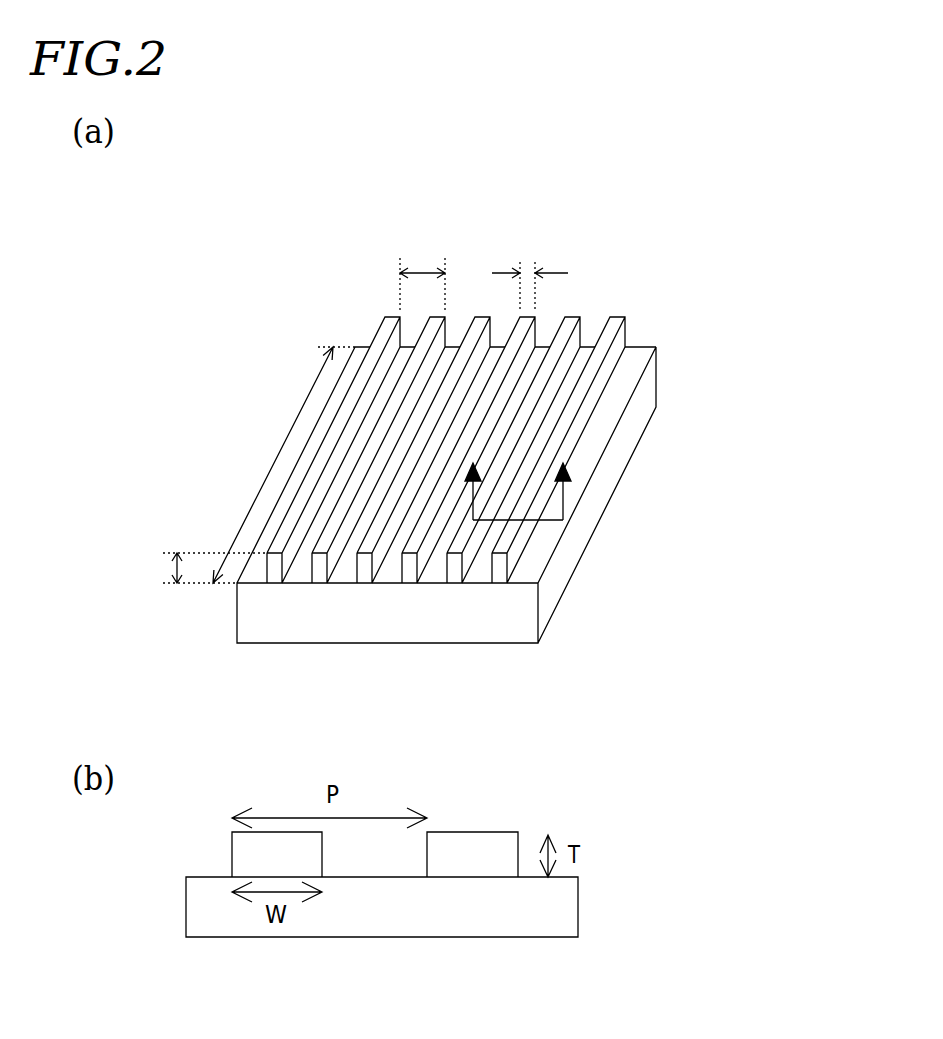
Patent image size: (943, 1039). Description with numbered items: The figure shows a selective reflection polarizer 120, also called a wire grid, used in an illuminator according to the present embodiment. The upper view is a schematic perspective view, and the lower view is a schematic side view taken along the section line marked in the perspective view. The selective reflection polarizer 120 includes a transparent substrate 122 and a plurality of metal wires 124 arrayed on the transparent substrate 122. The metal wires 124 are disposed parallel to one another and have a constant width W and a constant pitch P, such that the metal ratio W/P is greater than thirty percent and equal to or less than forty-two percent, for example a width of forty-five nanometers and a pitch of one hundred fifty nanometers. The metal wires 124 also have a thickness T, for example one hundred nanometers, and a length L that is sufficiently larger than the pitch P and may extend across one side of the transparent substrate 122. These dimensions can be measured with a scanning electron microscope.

The selective reflection polarizer 120 is at (478, 386).
The transparent substrate 122 is at (617, 468).
The metal wires 124 is at (610, 337).